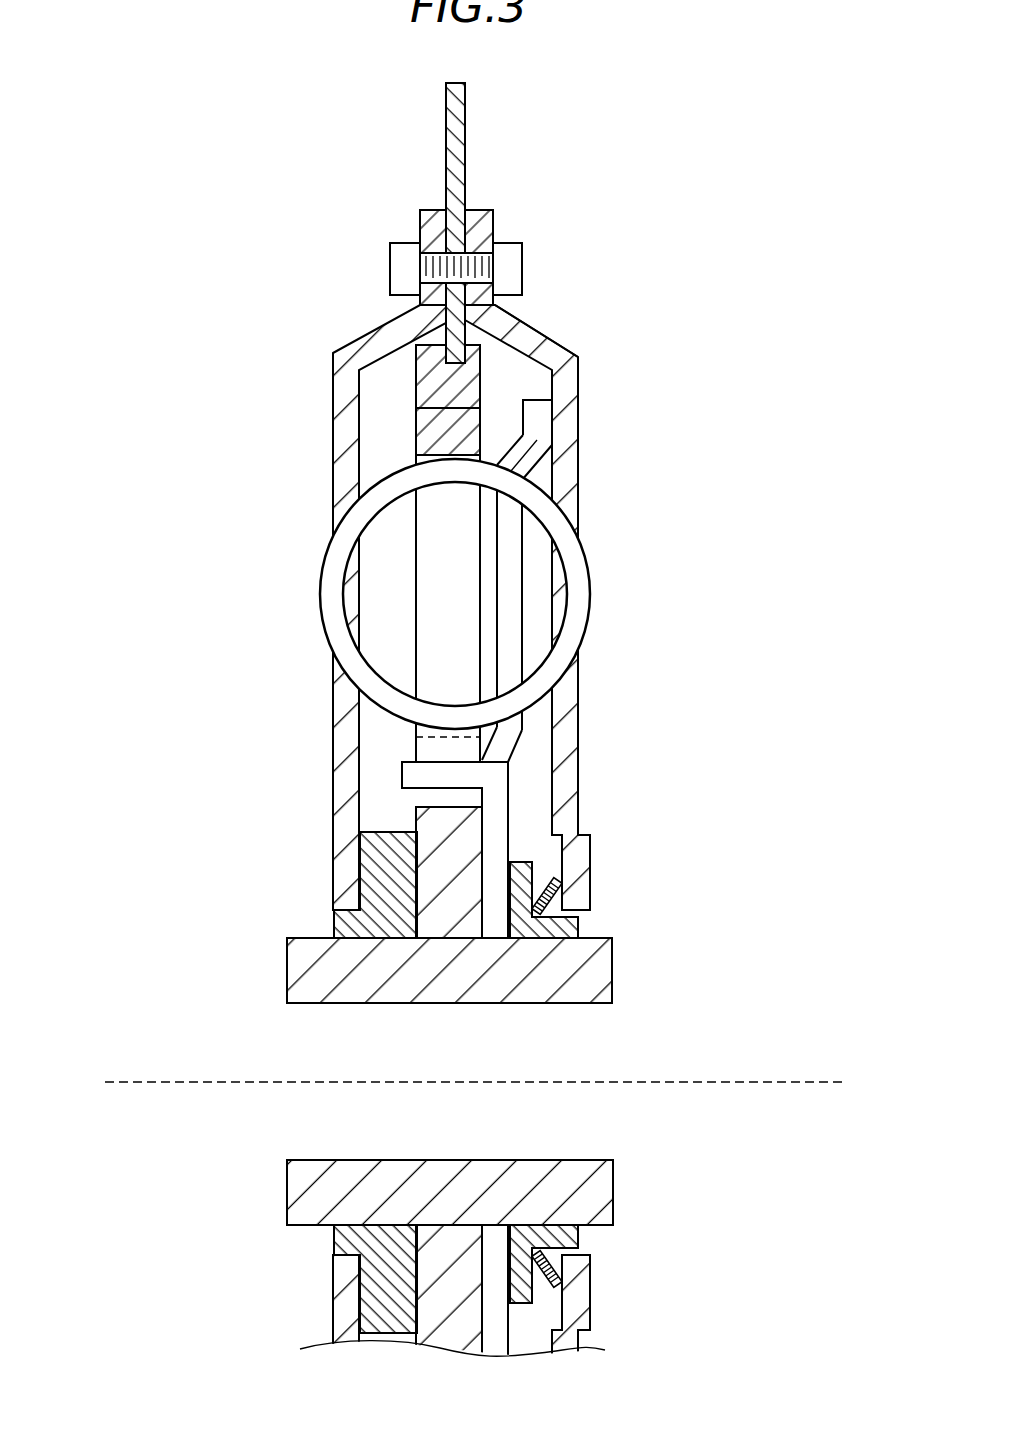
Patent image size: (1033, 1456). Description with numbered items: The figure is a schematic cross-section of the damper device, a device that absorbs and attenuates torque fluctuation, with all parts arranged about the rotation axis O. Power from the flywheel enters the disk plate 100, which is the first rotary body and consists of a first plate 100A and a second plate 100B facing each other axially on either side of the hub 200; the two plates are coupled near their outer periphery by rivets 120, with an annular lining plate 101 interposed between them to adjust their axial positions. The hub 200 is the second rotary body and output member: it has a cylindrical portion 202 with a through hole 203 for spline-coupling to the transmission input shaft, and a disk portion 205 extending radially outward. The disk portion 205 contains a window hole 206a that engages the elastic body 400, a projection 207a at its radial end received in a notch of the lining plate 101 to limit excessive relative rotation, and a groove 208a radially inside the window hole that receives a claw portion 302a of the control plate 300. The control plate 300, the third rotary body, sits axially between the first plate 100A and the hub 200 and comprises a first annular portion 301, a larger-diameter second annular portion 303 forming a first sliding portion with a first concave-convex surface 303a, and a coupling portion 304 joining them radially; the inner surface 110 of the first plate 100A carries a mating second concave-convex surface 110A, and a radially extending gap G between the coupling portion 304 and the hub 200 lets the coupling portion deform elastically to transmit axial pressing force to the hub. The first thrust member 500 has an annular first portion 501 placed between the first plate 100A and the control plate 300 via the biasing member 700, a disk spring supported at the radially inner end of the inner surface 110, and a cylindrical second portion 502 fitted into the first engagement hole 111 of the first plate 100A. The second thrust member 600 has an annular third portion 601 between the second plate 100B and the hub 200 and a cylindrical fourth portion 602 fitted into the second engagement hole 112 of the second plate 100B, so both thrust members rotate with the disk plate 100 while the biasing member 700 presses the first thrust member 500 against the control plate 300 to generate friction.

The lining plate 101 is at (465, 128).
The rivet 120 is at (510, 252).
The projection 207a is at (507, 318).
The disk plate 100 is at (555, 333).
The second plate 100B is at (333, 392).
The first plate 100A is at (568, 423).
The second concave-convex surface 110A is at (530, 400).
The inner surface 110 is at (535, 488).
The control plate 300 is at (510, 649).
The groove 208a is at (460, 750).
The gap G is at (492, 620).
The second annular portion 303 is at (533, 422).
The first concave-convex surface 303a is at (550, 442).
The coupling portion 304 is at (507, 547).
The window hole 206a is at (437, 575).
The first annular portion 301 is at (495, 806).
The claw portion 302a is at (417, 775).
The hub 200 is at (460, 837).
The disk portion 205 is at (468, 877).
The second thrust member 600 is at (378, 885).
The third portion 601 is at (365, 841).
The second engagement hole 112 is at (340, 912).
The fourth portion 602 is at (348, 934).
The first thrust member 500 is at (528, 872).
The first portion 501 is at (548, 888).
The second portion 502 is at (575, 922).
The biasing member 700 is at (558, 900).
The first engagement hole 111 is at (588, 932).
The cylindrical portion 202 is at (595, 988).
The rotation axis O is at (450, 1083).
The through hole 203 is at (565, 1103).
The elastic body 400 is at (588, 552).